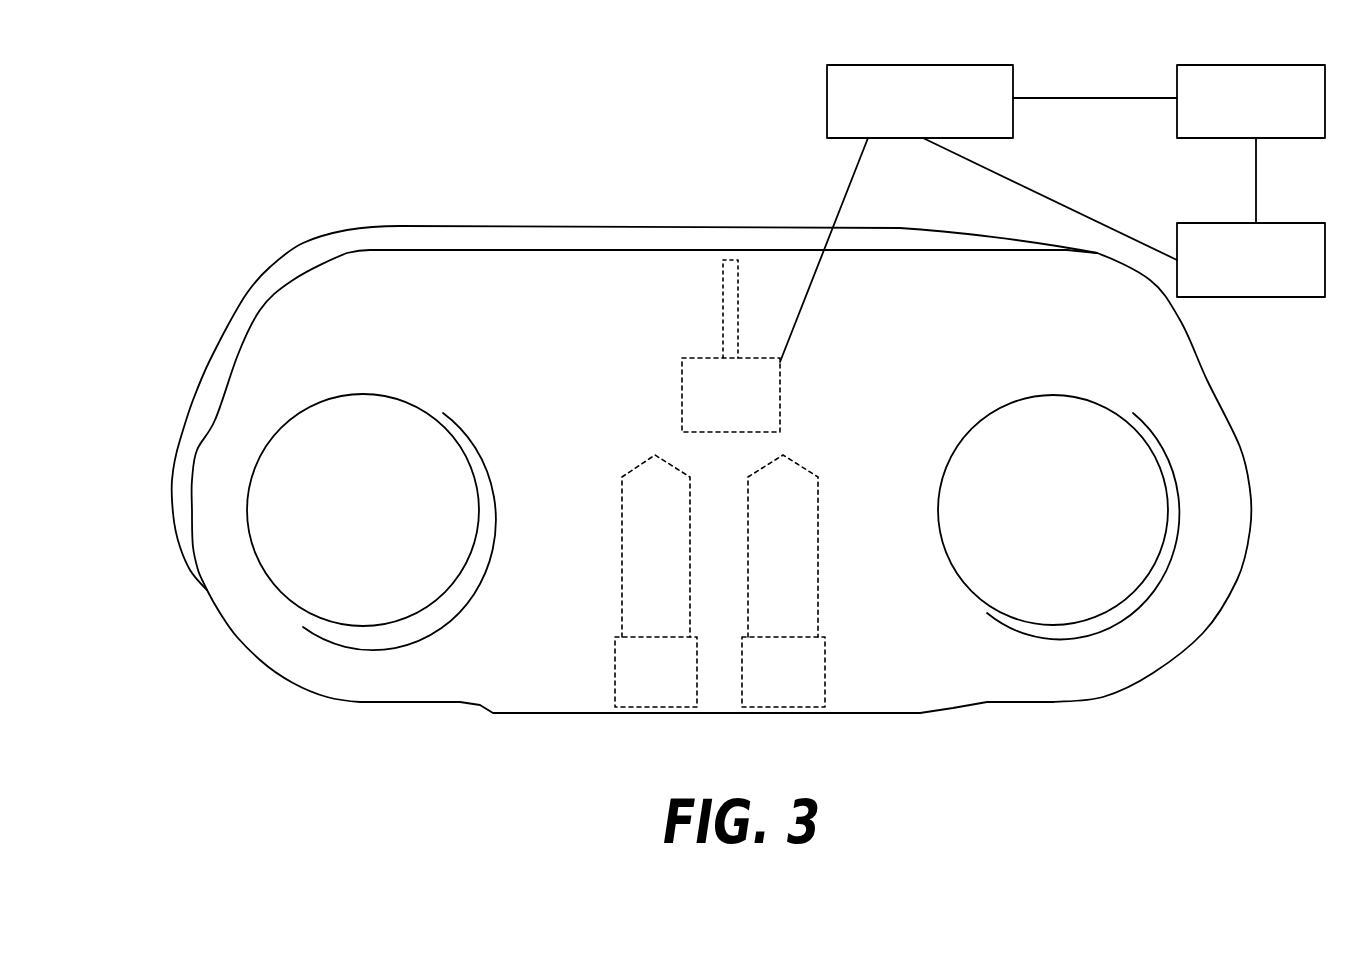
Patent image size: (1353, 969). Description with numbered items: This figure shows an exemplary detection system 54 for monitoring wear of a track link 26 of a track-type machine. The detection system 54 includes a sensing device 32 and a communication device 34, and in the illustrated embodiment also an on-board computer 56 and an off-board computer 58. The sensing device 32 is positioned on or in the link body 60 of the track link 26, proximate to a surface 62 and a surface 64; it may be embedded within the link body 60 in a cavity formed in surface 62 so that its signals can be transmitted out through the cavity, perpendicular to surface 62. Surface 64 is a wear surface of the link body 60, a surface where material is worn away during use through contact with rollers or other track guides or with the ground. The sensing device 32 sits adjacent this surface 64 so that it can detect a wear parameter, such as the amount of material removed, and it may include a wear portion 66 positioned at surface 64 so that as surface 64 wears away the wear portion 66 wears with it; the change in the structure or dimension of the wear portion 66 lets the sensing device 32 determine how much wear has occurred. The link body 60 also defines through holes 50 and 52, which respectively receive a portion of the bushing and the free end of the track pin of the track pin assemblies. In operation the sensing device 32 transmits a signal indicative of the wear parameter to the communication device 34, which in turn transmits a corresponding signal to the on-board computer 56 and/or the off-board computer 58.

The track link 26 is at (307, 675).
The sensing device 32 is at (688, 393).
The communication device 34 is at (827, 102).
The through hole 50 is at (278, 540).
The through hole 52 is at (1113, 573).
The detection system 54 is at (255, 189).
The on-board computer 56 is at (1177, 85).
The off-board computer 58 is at (1203, 223).
The link body 60 is at (237, 405).
The surface 62 is at (476, 360).
The surface 64 is at (547, 230).
The wear portion 66 is at (723, 287).